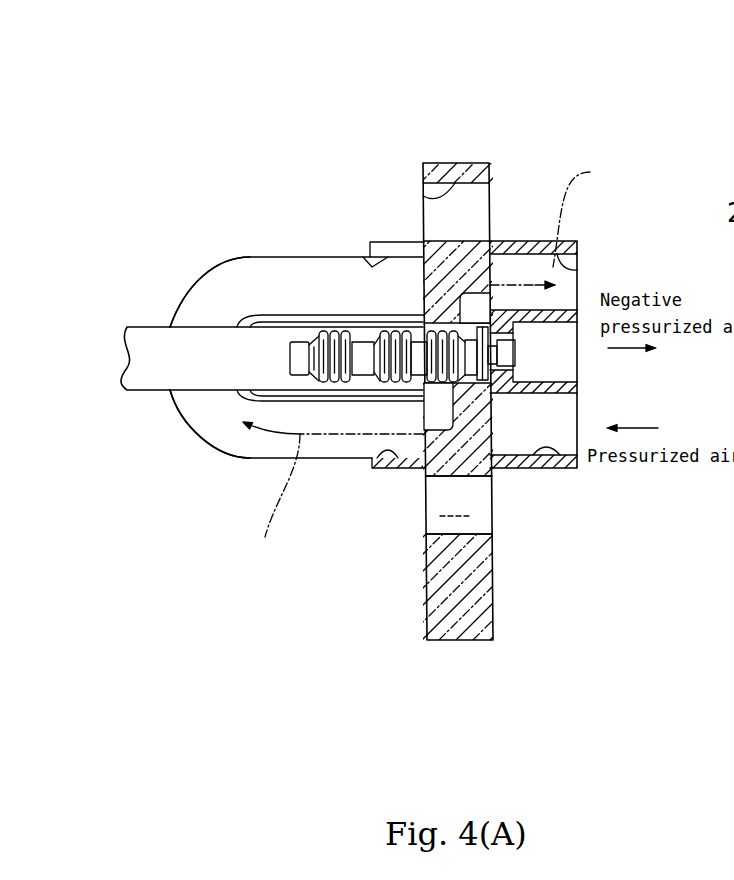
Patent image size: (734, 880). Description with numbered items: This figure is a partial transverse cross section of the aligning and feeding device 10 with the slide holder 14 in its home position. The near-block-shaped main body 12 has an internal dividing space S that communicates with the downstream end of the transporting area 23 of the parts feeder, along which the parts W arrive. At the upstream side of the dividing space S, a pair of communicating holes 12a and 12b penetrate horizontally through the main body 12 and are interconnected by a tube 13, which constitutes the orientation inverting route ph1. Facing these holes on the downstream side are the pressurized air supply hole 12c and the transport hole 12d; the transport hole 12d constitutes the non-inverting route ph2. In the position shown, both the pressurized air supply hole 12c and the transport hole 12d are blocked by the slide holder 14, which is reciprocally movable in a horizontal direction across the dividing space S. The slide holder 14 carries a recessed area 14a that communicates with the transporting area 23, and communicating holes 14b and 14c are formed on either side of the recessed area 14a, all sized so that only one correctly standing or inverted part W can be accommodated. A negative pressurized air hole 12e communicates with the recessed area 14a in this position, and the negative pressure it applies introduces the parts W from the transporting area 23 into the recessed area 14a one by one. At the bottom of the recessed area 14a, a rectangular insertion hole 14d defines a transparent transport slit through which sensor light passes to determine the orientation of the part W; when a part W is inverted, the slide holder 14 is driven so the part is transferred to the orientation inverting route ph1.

The aligning and feeding device 10 is at (270, 138).
The main body 12 is at (412, 467).
The communicating hole 12a is at (372, 466).
The communicating hole 12b is at (363, 257).
The pressurized air supply hole 12c is at (560, 452).
The transport hole 12d is at (558, 272).
The negative pressurized air hole 12e is at (558, 363).
The tube 13 is at (212, 417).
The slide holder 14 is at (455, 625).
The recessed area 14a is at (460, 325).
The communicating hole 14b is at (472, 533).
The communicating hole 14c is at (423, 194).
The insertion hole 14d is at (513, 333).
The transporting area 23 is at (222, 335).
The parts W is at (375, 332).
The orientation inverting route ph1 is at (327, 494).
The non-inverting route ph2 is at (565, 220).
The dividing space S is at (456, 502).